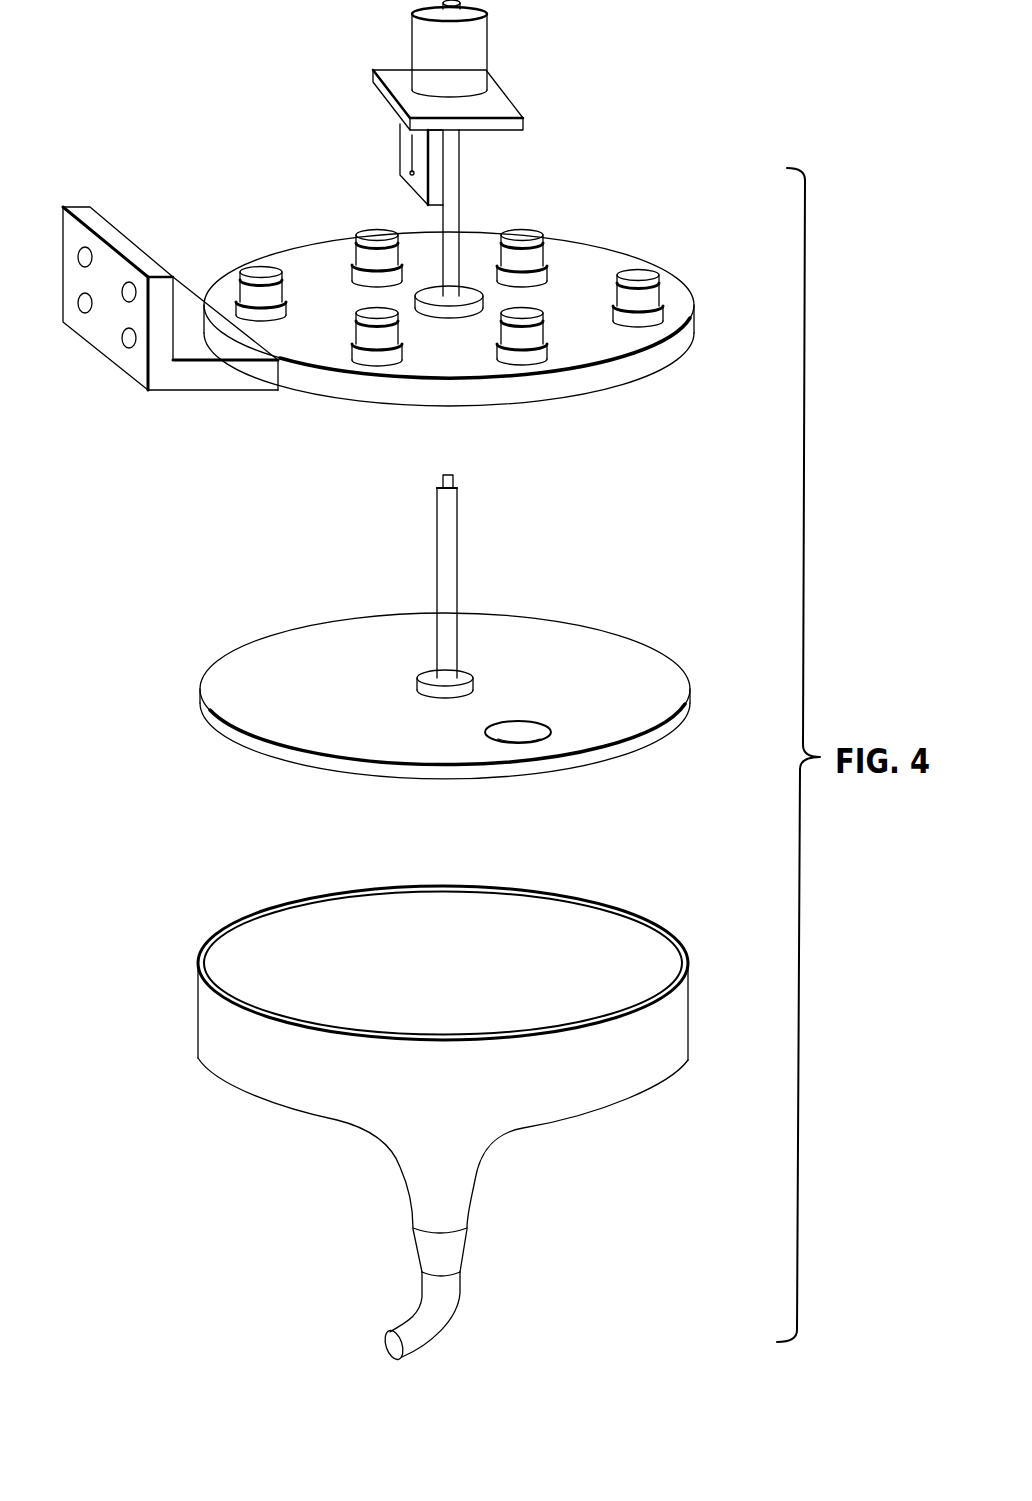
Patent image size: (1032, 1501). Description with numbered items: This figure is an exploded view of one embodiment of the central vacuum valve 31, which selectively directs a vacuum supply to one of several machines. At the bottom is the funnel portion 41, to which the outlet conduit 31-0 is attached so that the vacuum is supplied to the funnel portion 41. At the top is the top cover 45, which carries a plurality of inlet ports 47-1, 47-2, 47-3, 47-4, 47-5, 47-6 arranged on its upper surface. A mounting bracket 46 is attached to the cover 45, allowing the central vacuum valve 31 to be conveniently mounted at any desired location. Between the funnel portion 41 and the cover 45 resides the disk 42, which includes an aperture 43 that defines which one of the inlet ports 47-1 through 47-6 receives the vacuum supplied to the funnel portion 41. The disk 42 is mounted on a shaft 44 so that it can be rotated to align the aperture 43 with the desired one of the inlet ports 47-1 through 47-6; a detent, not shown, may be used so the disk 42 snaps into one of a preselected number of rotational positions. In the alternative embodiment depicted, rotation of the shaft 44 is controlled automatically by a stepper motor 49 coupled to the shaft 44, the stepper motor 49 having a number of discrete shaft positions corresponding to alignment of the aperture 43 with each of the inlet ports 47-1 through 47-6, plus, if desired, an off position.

The central vacuum valve 31 is at (92, 871).
The outlet conduit 31-0 is at (443, 1313).
The funnel portion 41 is at (675, 1037).
The disk 42 is at (630, 647).
The aperture 43 is at (530, 723).
The shaft 44 is at (450, 558).
The top cover 45 is at (588, 252).
The mounting bracket 46 is at (92, 220).
The inlet port 47-1 is at (522, 232).
The inlet port 47-2 is at (643, 273).
The inlet port 47-3 is at (537, 330).
The inlet port 47-4 is at (355, 333).
The inlet port 47-5 is at (247, 265).
The inlet port 47-6 is at (366, 232).
The stepper motor 49 is at (480, 50).